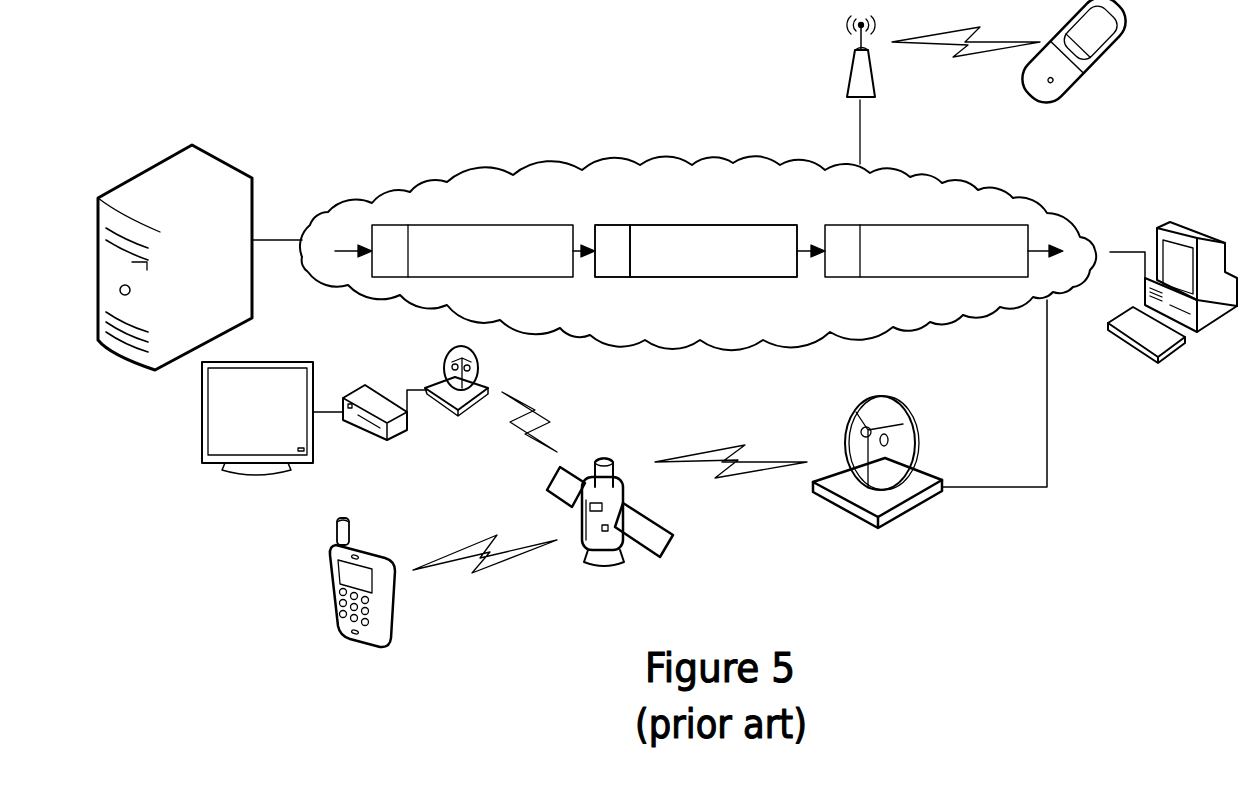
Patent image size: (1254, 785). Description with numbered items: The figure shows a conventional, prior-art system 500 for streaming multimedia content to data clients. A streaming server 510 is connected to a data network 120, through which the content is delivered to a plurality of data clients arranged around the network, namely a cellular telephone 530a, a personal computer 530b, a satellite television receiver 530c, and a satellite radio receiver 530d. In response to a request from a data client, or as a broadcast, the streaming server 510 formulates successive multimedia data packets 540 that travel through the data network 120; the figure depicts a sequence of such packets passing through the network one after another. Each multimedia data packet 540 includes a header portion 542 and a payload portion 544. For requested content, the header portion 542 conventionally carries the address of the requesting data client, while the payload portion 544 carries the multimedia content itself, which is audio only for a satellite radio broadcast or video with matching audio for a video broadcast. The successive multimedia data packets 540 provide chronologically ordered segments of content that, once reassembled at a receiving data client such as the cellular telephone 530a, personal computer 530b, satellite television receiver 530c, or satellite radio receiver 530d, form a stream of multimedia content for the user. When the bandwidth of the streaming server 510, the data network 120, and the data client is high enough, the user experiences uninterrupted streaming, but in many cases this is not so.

The conventional system for streaming multimedia content 500 is at (548, 100).
The data network 120 is at (458, 172).
The streaming server 510 is at (118, 366).
The cellular telephone 530a is at (1053, 100).
The personal computer 530b is at (1205, 330).
The satellite television receiver 530c is at (358, 428).
The satellite radio receiver 530d is at (331, 549).
The multimedia data packet 540 is at (917, 225).
The header portion 542 is at (610, 278).
The payload portion 544 is at (697, 278).